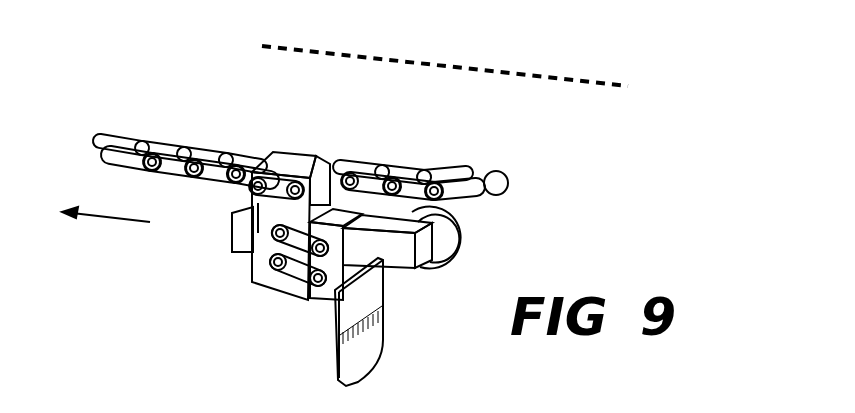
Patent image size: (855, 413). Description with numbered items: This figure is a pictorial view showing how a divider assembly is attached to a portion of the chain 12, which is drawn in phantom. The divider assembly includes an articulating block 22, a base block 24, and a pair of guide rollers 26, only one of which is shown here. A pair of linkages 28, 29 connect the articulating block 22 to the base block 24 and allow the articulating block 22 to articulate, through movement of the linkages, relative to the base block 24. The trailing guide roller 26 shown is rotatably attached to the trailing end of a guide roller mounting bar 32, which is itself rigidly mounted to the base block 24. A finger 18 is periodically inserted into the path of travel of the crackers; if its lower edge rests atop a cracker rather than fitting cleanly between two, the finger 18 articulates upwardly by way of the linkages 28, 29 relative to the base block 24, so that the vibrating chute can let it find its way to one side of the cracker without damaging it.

The chain 12 is at (489, 94).
The finger 18 is at (380, 291).
The articulating block 22 is at (341, 205).
The base block 24 is at (241, 236).
The guide roller 26 is at (452, 229).
The linkage 28 is at (283, 281).
The linkage 29 is at (298, 284).
The guide roller mounting bar 32 is at (235, 231).